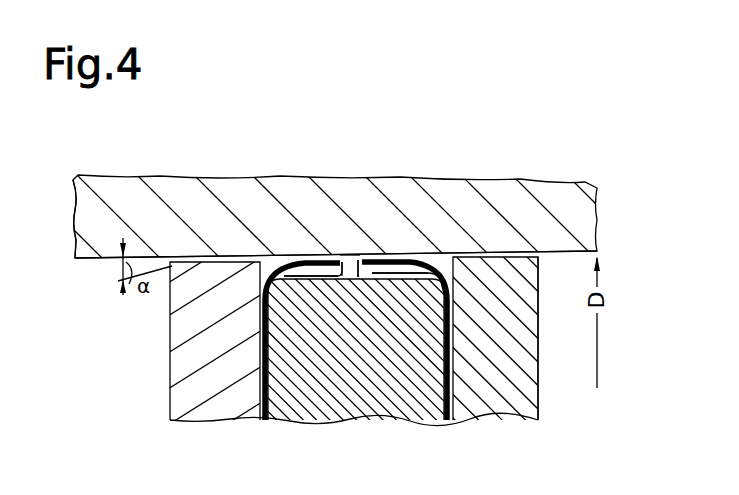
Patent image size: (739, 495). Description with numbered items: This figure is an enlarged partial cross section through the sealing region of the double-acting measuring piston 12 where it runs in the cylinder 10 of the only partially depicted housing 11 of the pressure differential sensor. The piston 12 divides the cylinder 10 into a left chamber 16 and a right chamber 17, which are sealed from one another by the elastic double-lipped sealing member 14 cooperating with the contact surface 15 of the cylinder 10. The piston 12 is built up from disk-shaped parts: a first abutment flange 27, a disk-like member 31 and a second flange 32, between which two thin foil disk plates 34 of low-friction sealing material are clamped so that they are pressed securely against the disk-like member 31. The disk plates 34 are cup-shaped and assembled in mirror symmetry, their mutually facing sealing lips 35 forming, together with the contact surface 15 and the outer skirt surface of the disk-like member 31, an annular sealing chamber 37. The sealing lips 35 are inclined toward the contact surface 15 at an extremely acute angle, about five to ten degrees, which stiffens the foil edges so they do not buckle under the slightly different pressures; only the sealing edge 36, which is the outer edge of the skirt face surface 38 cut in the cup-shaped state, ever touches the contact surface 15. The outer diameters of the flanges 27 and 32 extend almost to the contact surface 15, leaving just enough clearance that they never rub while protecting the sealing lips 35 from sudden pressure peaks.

The cylinder 10 is at (150, 245).
The housing 11 is at (538, 186).
The double-acting piston 12 is at (555, 335).
The double-lipped sealing member 14 is at (377, 243).
The contact surface 15 is at (75, 260).
The left chamber 16 is at (129, 415).
The right chamber 17 is at (585, 402).
The first abutment flange 27 is at (178, 345).
The disk-like member 31 is at (358, 383).
The second flange 32 is at (520, 305).
The disk plates 34 is at (264, 398).
The sealing lips 35 is at (308, 258).
The sealing edge 36 is at (347, 256).
The annular sealing chamber 37 is at (372, 274).
The skirt face surface 38 is at (348, 262).